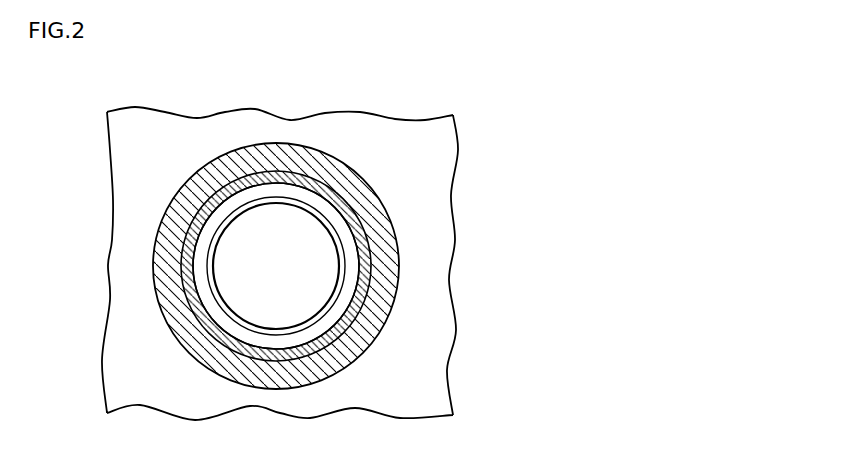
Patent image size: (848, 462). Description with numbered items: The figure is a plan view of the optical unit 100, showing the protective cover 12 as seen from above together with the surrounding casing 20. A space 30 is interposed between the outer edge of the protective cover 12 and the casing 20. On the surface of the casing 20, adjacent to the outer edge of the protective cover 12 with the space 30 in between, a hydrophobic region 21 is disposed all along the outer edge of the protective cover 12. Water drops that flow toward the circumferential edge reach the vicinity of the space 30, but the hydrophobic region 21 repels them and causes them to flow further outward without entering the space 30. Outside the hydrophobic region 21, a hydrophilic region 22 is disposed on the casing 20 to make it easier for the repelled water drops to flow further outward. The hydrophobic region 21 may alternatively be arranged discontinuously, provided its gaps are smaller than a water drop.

The optical unit 100 is at (437, 89).
The casing 20 is at (442, 173).
The hydrophobic region 21 is at (187, 270).
The hydrophilic region 22 is at (378, 312).
The space 30 is at (282, 186).
The protective cover 12 is at (328, 263).